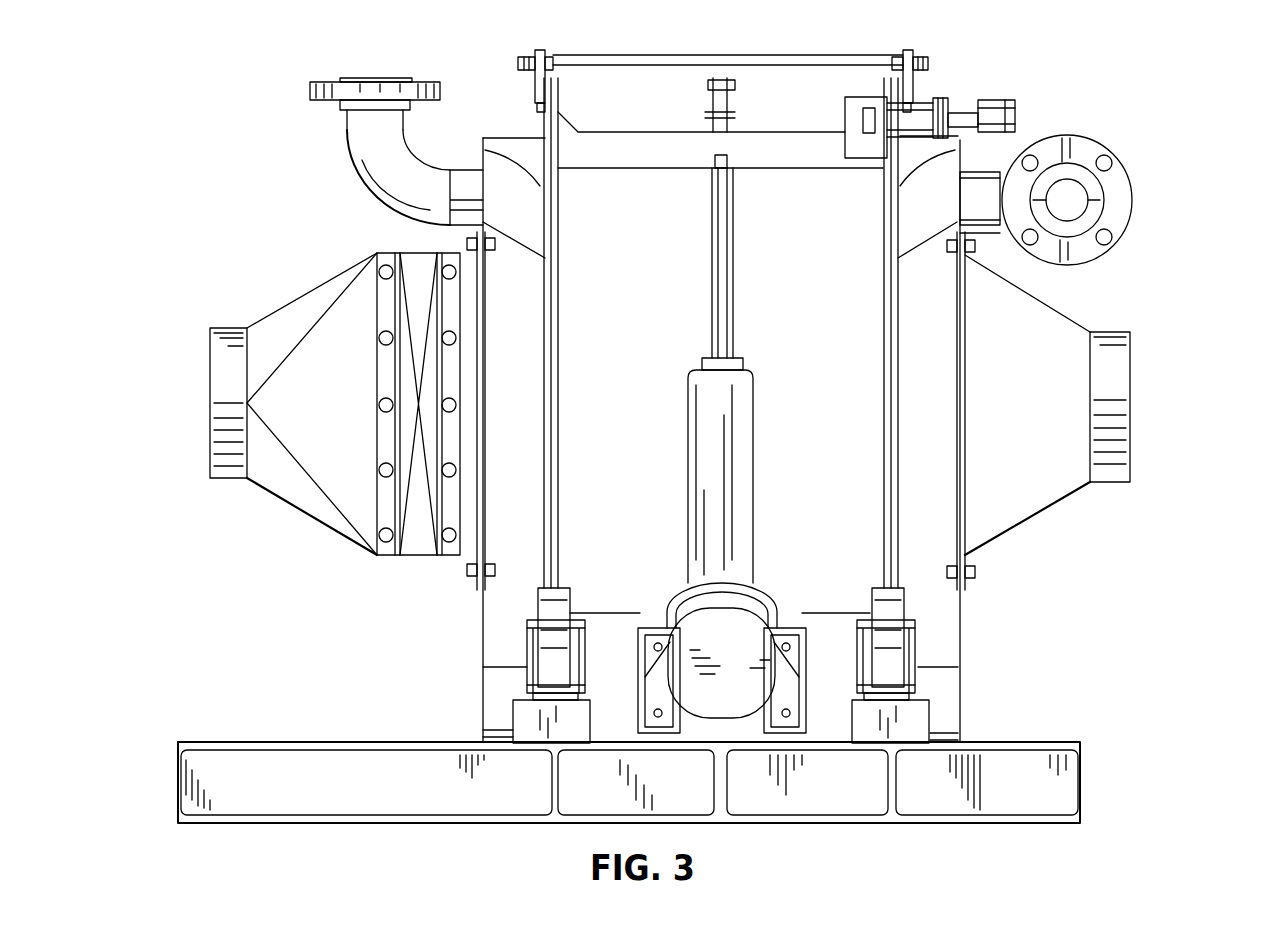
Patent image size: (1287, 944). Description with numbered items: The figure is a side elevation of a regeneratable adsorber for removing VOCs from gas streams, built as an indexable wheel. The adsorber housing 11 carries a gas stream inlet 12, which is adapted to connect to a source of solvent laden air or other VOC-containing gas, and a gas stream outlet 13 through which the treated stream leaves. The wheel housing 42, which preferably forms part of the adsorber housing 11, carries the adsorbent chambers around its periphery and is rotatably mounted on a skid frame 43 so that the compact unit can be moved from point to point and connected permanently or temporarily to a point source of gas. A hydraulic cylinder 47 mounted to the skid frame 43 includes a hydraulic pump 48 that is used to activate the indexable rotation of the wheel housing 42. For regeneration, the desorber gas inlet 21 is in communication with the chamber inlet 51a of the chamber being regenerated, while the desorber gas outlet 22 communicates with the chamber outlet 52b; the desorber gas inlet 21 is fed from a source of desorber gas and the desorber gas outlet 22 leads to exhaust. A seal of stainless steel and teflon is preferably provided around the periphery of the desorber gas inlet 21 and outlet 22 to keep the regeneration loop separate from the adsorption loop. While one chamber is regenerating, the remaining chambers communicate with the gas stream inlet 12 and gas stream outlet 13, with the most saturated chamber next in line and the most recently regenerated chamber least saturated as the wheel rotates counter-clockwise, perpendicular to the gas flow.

The adsorber housing 11 is at (961, 576).
The gas stream inlet 12 is at (210, 387).
The gas stream outlet 13 is at (1130, 412).
The desorber gas inlet 21 is at (533, 140).
The desorber gas outlet 22 is at (963, 156).
The wheel housing 42 is at (669, 297).
The skid frame 43 is at (277, 742).
The hydraulic cylinder 47 is at (753, 463).
The hydraulic pump 48 is at (778, 592).
The chamber inlet 51a is at (483, 150).
The chamber outlet 52b is at (940, 153).